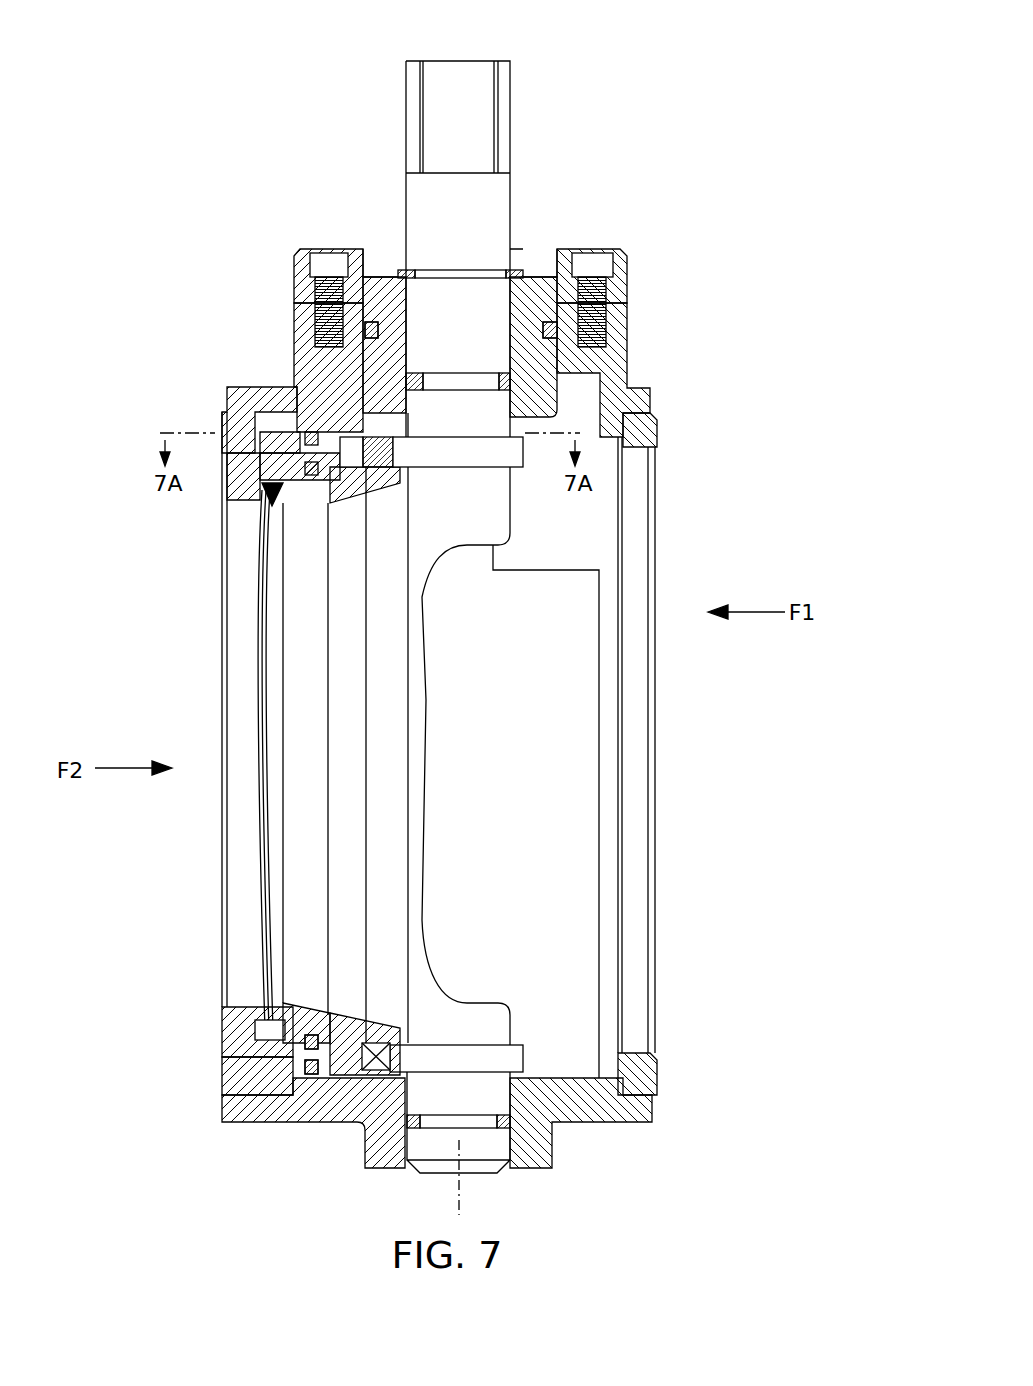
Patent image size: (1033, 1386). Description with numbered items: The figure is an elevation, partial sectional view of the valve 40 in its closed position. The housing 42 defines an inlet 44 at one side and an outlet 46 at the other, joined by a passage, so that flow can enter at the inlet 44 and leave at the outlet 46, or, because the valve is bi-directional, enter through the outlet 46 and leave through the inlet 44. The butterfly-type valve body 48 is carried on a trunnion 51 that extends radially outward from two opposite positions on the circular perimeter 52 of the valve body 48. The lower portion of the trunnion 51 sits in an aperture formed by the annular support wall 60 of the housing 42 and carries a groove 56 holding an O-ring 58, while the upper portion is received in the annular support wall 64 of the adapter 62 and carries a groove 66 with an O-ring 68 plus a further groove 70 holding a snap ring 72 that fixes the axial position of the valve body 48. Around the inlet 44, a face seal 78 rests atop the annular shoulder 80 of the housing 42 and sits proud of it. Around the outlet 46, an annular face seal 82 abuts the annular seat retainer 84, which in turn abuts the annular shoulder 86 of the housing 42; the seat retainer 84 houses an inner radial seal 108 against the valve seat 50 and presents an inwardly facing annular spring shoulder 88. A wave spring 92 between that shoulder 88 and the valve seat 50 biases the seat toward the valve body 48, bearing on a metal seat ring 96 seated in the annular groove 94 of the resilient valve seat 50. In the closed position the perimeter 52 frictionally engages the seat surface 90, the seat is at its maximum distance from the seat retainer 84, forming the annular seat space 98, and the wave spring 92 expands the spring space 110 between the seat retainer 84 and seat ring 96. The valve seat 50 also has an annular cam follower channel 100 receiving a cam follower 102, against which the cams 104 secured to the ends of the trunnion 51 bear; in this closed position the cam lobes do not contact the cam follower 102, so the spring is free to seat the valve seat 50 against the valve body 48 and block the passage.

The valve 40 is at (672, 172).
The housing 42 is at (622, 356).
The inlet 44 is at (640, 497).
The outlet 46 is at (232, 590).
The valve body 48 is at (405, 790).
The valve seat 50 is at (362, 1080).
The trunnion 51 is at (502, 196).
The perimeter 52 is at (389, 728).
The groove 56 is at (470, 1130).
The O-ring 58 is at (514, 1122).
The annular support wall 60 is at (512, 1082).
The adapter 62 is at (622, 280).
The annular support wall 64 is at (413, 312).
The groove 66 is at (452, 373).
The O-ring 68 is at (423, 380).
The groove 70 is at (455, 272).
The snap ring 72 is at (523, 272).
The face seal 78 is at (654, 430).
The annular shoulder 80 is at (640, 1086).
The annular face seal 82 is at (228, 426).
The annular seat retainer 84 is at (230, 488).
The annular shoulder 86 is at (302, 386).
The annular spring shoulder 88 is at (268, 1020).
The seat surface 90 is at (366, 500).
The wave spring 92 is at (266, 608).
The annular groove 94 is at (309, 500).
The seat ring 96 is at (289, 1020).
The annular seat space 98 is at (330, 1072).
The annular cam follower channel 100 is at (375, 458).
The cam follower 102 is at (382, 1048).
The cam 104 is at (528, 458).
The inner radial seal 108 is at (331, 1040).
The spring space 110 is at (268, 497).